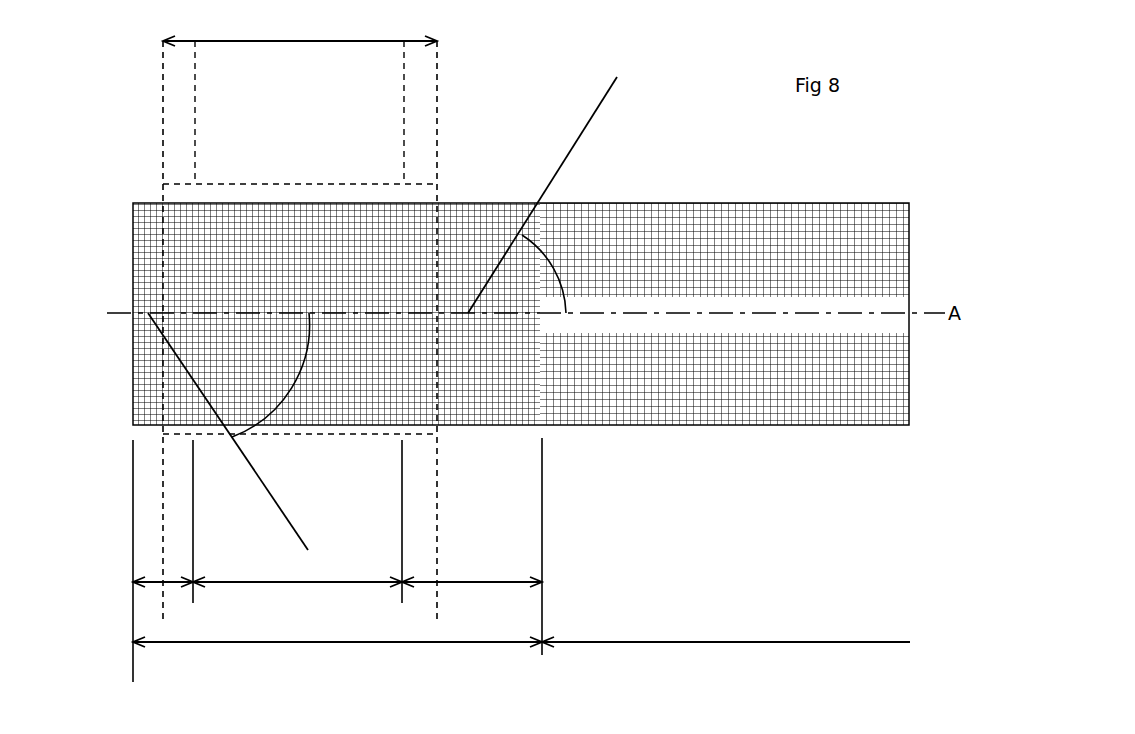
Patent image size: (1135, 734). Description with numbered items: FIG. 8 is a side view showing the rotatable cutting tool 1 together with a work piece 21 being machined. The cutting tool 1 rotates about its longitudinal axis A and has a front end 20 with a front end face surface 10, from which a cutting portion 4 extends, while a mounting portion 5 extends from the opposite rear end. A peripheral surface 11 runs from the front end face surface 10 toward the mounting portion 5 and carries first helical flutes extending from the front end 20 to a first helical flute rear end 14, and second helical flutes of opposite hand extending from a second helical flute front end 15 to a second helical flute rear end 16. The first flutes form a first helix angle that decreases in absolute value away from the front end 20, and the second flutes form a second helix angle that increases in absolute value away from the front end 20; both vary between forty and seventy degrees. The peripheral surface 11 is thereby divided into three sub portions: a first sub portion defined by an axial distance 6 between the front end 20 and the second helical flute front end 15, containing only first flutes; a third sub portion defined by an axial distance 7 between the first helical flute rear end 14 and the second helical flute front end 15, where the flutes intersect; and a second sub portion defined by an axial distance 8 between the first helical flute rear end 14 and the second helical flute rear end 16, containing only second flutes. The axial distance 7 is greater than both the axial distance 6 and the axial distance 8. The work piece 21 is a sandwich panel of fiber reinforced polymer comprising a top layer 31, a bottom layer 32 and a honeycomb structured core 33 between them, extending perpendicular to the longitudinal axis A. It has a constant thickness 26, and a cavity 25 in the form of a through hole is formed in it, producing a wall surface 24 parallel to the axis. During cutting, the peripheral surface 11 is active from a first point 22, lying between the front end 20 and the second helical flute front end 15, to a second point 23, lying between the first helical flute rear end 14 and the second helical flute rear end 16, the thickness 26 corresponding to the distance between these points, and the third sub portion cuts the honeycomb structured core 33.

The rotatable cutting tool 1 is at (682, 145).
The cutting portion 4 is at (337, 654).
The mounting portion 5 is at (726, 654).
The axial distance 6 is at (163, 596).
The axial distance 7 is at (297, 593).
The axial distance 8 is at (472, 593).
The front end face surface 10 is at (135, 273).
The peripheral surface 11 is at (645, 515).
The first helical flute rear end 14 is at (404, 532).
The second helical flute front end 15 is at (198, 532).
The second helical flute rear end 16 is at (543, 561).
The front end 20 is at (138, 576).
The work piece 21 is at (321, 110).
The first point 22 is at (167, 313).
The second point 23 is at (442, 313).
The wall surface 24 is at (372, 184).
The cavity 25 is at (198, 195).
The thickness 26 is at (300, 29).
The top layer 31 is at (419, 280).
The bottom layer 32 is at (300, 280).
The honeycomb structured core 33 is at (300, 312).